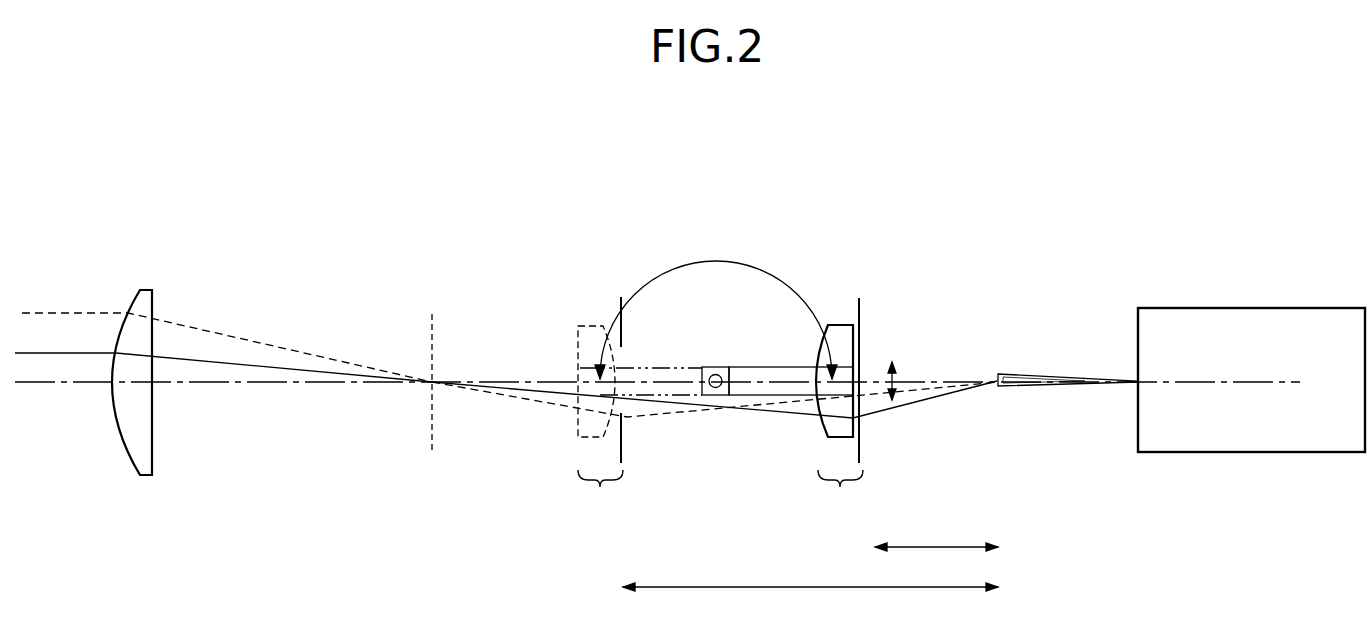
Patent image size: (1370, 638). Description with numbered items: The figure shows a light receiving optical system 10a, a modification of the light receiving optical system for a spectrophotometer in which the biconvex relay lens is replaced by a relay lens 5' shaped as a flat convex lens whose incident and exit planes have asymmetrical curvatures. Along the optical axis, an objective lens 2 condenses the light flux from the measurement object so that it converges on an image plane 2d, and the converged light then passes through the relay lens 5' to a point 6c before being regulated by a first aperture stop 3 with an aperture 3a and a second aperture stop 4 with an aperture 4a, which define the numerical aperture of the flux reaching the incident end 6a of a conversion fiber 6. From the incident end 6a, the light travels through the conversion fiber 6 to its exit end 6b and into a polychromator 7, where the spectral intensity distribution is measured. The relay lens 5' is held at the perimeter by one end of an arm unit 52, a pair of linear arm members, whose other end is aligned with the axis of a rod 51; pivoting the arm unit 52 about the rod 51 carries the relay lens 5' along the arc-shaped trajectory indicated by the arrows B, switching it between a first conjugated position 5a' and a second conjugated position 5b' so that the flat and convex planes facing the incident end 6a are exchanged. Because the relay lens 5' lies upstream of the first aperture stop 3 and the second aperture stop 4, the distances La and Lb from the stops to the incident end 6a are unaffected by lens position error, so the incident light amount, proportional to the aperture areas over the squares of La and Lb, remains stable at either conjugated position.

The light receiving optical system 10a is at (690, 361).
The objective lens 2 is at (137, 300).
The image plane 2d is at (430, 335).
The light source image point (Ra, Rb) 6c is at (431, 384).
The second conjugated position 5b' is at (601, 421).
The second aperture stop 4 is at (621, 305).
The aperture 4a is at (630, 354).
The arrows B is at (678, 268).
The rod 51 is at (713, 392).
The arm unit 52 is at (776, 392).
The first conjugated position 5a' is at (840, 421).
The relay lens 5' is at (840, 288).
The first aperture stop 3 is at (862, 303).
The aperture 3a is at (867, 350).
The conversion fiber 6 is at (1072, 375).
The incident end 6a is at (989, 394).
The exit end 6b is at (1128, 394).
The polychromator 7 is at (1294, 308).
The distance La is at (936, 533).
The distance Lb is at (810, 573).